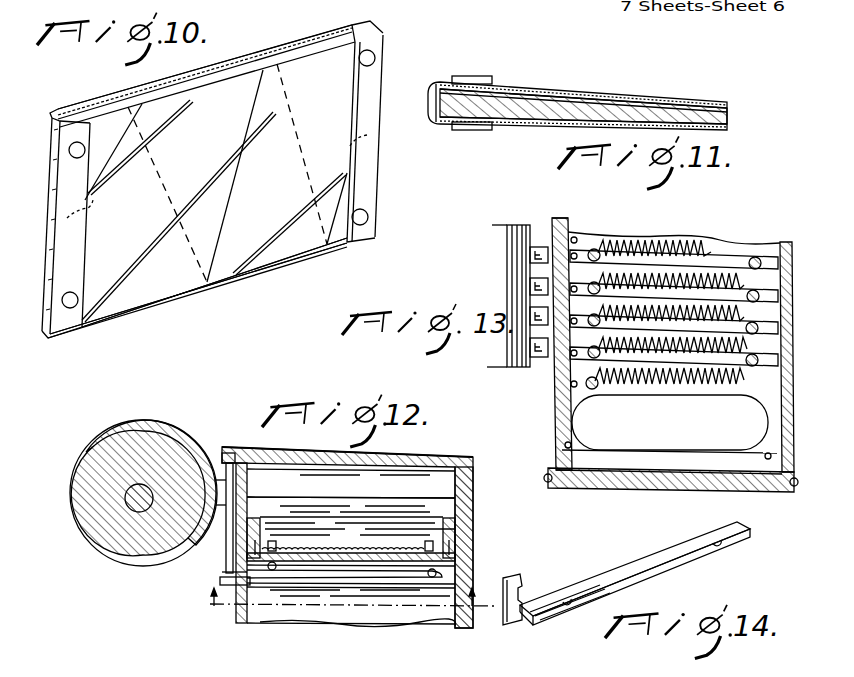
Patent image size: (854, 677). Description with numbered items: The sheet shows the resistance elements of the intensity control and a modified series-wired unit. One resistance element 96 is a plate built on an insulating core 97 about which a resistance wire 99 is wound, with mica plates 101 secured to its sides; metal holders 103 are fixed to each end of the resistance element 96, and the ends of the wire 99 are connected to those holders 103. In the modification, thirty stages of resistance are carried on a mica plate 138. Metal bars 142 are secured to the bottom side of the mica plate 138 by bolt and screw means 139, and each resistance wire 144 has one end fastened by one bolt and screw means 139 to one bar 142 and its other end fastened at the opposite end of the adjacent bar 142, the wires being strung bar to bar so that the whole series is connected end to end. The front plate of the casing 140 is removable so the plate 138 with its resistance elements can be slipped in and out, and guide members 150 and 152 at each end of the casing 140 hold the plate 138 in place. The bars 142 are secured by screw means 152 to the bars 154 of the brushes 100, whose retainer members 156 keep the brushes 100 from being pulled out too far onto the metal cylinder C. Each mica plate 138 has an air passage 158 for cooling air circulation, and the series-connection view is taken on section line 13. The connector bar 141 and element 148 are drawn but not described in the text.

In FIG. 10, the resistance element 96 is at (298, 247).
In FIG. 11, the resistance element 96 is at (560, 84).
In FIG. 10, the insulating core 97 is at (317, 40).
In FIG. 11, the insulating core 97 is at (632, 103).
In FIG. 10, the resistance wire 99 is at (223, 273).
In FIG. 11, the resistance wire 99 is at (520, 124).
In FIG. 13, the brushes 100 is at (530, 256).
In FIG. 10, the mica plates 101 is at (200, 80).
In FIG. 10, the metal holders 103 is at (368, 153).
In FIG. 11, the metal holders 103 is at (485, 129).
In FIG. 13, the mica plate 138 is at (583, 381).
In FIG. 13, the bolt and screw means 139 is at (598, 248).
In FIG. 12, the bolt and screw means 139 is at (462, 574).
In FIG. 13, the casing 140 is at (768, 426).
In FIG. 12, the casing 140 is at (473, 531).
In FIG. 14, the end clip 141 is at (525, 614).
In FIG. 13, the metal bars 142 is at (782, 262).
In FIG. 12, the metal bars 142 is at (352, 566).
In FIG. 14, the metal bars 142 is at (676, 556).
In FIG. 13, the resistance wires 144 is at (722, 262).
In FIG. 12, the resistance wires 144 is at (372, 549).
In FIG. 12, the bottom plate 148 is at (433, 624).
In FIG. 12, the guide member 150 is at (352, 512).
In FIG. 12, the guide member 152 is at (351, 600).
In FIG. 12, the bars of the brushes 154 is at (232, 552).
In FIG. 12, the retainer members 156 is at (250, 481).
In FIG. 13, the air passage 158 is at (647, 436).
In FIG. 12, the section line 13- 13 is at (344, 604).
In FIG. 12, the metal cylinder C is at (100, 548).